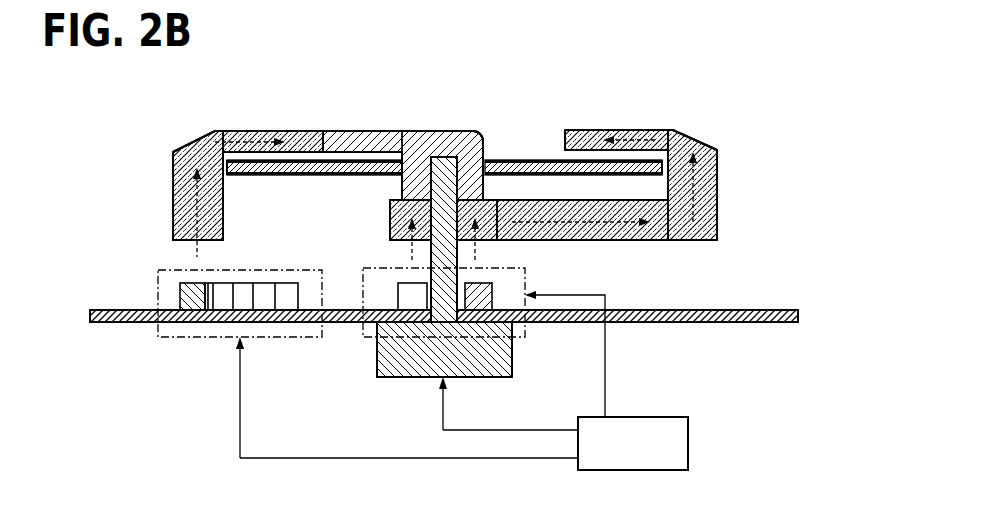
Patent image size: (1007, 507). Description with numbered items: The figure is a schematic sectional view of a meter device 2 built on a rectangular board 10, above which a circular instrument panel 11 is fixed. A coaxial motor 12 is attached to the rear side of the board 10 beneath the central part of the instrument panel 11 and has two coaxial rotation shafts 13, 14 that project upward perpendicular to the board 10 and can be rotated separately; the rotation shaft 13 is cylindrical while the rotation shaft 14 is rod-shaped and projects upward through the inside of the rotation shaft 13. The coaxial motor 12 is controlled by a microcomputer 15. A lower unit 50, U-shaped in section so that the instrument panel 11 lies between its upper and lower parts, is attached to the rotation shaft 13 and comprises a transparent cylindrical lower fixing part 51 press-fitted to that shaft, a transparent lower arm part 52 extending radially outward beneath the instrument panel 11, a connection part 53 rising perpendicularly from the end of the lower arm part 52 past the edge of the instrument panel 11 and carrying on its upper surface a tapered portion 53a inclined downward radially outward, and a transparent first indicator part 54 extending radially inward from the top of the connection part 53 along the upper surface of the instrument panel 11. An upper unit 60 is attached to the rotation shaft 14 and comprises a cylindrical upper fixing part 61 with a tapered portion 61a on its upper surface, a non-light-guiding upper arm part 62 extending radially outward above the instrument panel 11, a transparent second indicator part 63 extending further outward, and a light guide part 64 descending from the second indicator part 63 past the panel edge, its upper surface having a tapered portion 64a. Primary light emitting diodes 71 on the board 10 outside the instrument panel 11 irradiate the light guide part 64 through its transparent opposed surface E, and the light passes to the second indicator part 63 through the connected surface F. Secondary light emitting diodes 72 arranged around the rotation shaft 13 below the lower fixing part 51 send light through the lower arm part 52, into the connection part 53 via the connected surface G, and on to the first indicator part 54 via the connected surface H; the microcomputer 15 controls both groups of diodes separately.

The meter device 2 is at (434, 192).
The board 10 is at (130, 309).
The instrument panel 11 is at (238, 176).
The coaxial motor 12 is at (380, 378).
The rotation shaft 13 is at (430, 266).
The rotation shaft 14 is at (431, 187).
The microcomputer 15 is at (690, 444).
The lower unit 50 is at (641, 173).
The lower fixing part 51 is at (526, 173).
The lower arm part 52 is at (608, 241).
The connection part 53 is at (718, 198).
The tapered portion 53a is at (688, 133).
The first indicator part 54 is at (639, 130).
The upper unit 60 is at (331, 162).
The upper fixing part 61 is at (485, 150).
The tapered portion 61a is at (474, 130).
The upper arm part 62 is at (397, 129).
The second indicator part 63 is at (236, 131).
The light guide part 64 is at (173, 175).
The tapered portion 64a is at (187, 143).
The primary light emitting diode 71 is at (187, 282).
The secondary light emitting diode 72 is at (398, 294).
The opposed surface E is at (212, 240).
The connected surface F is at (231, 131).
The connected surface G is at (665, 241).
The connected surface H is at (660, 130).